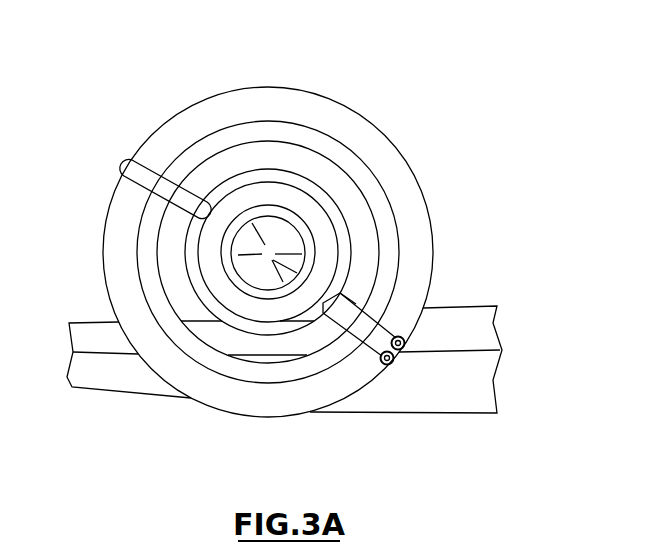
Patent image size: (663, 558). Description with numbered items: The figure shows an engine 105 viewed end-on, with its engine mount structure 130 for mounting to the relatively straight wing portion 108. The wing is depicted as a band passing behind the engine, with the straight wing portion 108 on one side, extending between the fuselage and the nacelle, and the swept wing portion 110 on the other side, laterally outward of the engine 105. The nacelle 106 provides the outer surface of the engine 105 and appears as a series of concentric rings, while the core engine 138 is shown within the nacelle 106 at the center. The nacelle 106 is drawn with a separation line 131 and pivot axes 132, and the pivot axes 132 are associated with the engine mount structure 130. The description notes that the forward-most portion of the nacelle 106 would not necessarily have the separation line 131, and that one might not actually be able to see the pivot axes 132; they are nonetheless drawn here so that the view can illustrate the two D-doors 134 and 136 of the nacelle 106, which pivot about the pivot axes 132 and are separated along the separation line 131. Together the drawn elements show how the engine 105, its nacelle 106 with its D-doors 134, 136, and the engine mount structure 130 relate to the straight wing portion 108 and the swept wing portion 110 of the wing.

The engine 105 is at (314, 64).
The nacelle 106 is at (158, 160).
The straight wing portion 108 is at (437, 395).
The swept wing portion 110 is at (103, 393).
The engine mount structure 130 is at (350, 303).
The separation line 131 is at (127, 186).
The pivot axes 132 is at (400, 337).
The D-door 134 is at (173, 373).
The D-door 136 is at (388, 137).
The core engine 138 is at (269, 294).